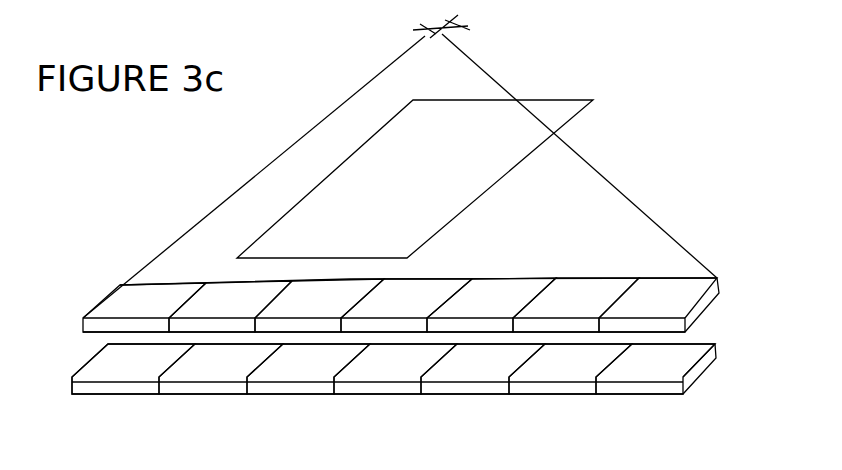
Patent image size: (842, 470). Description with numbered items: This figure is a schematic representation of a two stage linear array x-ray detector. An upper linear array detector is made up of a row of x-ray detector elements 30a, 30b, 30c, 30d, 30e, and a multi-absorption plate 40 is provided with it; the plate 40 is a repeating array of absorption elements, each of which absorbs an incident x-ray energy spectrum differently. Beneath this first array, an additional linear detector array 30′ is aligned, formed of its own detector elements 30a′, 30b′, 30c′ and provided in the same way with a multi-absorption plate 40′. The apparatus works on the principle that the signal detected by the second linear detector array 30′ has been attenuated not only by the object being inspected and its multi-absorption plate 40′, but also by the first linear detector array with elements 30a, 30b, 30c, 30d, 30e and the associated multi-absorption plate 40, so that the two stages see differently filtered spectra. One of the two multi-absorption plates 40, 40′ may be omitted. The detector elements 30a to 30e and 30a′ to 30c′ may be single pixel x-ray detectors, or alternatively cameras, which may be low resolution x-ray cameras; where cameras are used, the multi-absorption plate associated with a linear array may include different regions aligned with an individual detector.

The multi-absorption plate 40 is at (677, 263).
The multi-absorption plate 40′ is at (622, 330).
The x-ray detector element 30a is at (110, 332).
The x-ray detector element 30b is at (567, 331).
The x-ray detector element 30c is at (716, 312).
The x-ray detector element 30d is at (392, 331).
The x-ray detector element 30e is at (305, 331).
The linear detector array 30′ is at (716, 389).
The x-ray detector element 30a′ is at (393, 404).
The x-ray detector element 30b′ is at (395, 404).
The x-ray detector element 30c′ is at (308, 401).